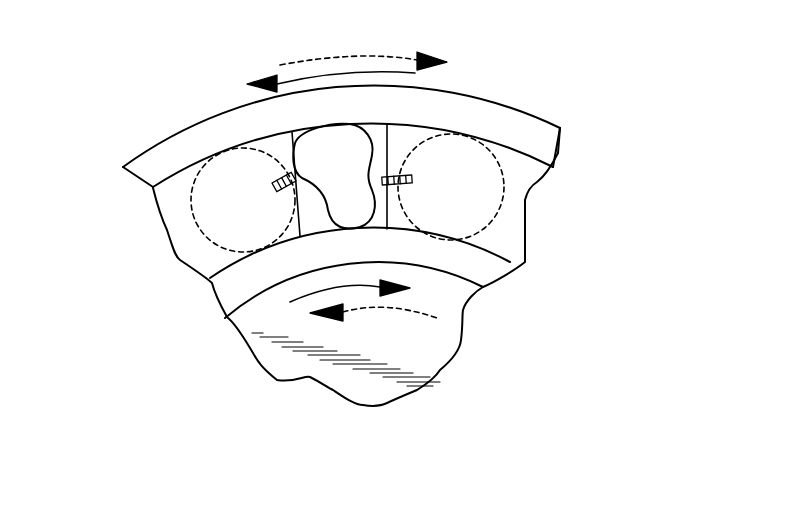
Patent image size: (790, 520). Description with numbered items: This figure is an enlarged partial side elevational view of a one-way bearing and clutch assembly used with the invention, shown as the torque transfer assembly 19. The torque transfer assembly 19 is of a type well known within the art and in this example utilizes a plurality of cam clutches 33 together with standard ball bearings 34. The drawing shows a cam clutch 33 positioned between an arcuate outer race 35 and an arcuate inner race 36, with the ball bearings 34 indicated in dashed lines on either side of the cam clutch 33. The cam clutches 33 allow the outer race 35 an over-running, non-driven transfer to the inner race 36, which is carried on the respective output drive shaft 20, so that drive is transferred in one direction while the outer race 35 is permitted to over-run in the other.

The torque transfer assembly 19 is at (522, 80).
The output drive shaft 20 is at (423, 360).
The cam clutch 33 is at (346, 153).
The ball bearing 34 is at (207, 235).
The outer race 35 is at (538, 145).
The inner race 36 is at (472, 267).